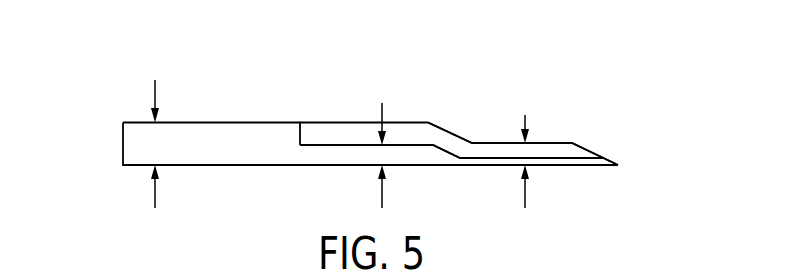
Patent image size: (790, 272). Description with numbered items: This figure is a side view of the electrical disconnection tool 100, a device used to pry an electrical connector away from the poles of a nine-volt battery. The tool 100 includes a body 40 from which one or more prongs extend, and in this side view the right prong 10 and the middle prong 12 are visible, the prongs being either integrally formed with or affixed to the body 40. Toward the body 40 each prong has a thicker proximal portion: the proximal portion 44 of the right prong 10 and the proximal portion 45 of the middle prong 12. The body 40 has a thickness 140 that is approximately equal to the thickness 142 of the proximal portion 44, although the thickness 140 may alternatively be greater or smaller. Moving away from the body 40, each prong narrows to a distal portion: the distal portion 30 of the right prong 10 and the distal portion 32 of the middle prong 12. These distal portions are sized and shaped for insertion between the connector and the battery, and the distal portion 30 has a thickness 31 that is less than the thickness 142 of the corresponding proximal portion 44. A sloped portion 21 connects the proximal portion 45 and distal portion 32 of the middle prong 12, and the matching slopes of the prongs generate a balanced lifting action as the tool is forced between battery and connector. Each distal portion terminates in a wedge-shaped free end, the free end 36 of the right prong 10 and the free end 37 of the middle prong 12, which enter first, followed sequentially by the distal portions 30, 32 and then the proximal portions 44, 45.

The electrical disconnection tool 100 is at (86, 78).
The right prong 10 is at (305, 157).
The body 40 is at (233, 122).
The middle prong 12 is at (340, 122).
The proximal portion 44 is at (418, 145).
The sloped portion 21 is at (452, 131).
The distal portion 30 is at (537, 157).
The free end 37 is at (587, 143).
The free end 36 is at (617, 165).
The thickness 140 is at (155, 195).
The proximal portion 45 is at (388, 122).
The thickness 142 is at (382, 195).
The distal portion 32 is at (495, 141).
The thickness 31 is at (525, 195).